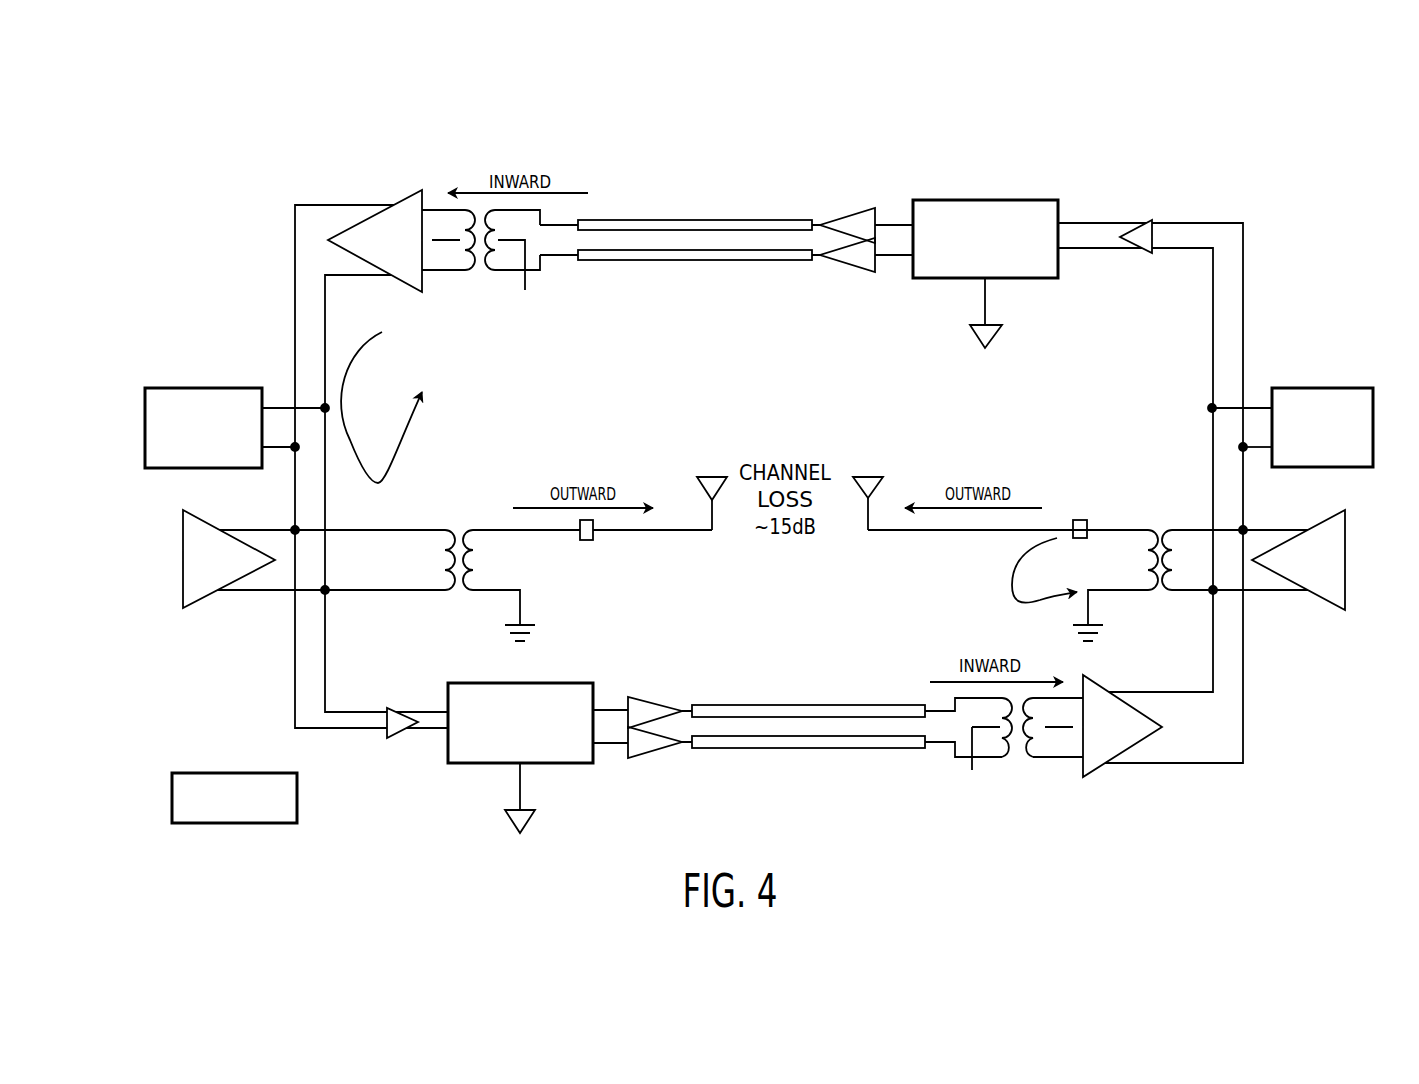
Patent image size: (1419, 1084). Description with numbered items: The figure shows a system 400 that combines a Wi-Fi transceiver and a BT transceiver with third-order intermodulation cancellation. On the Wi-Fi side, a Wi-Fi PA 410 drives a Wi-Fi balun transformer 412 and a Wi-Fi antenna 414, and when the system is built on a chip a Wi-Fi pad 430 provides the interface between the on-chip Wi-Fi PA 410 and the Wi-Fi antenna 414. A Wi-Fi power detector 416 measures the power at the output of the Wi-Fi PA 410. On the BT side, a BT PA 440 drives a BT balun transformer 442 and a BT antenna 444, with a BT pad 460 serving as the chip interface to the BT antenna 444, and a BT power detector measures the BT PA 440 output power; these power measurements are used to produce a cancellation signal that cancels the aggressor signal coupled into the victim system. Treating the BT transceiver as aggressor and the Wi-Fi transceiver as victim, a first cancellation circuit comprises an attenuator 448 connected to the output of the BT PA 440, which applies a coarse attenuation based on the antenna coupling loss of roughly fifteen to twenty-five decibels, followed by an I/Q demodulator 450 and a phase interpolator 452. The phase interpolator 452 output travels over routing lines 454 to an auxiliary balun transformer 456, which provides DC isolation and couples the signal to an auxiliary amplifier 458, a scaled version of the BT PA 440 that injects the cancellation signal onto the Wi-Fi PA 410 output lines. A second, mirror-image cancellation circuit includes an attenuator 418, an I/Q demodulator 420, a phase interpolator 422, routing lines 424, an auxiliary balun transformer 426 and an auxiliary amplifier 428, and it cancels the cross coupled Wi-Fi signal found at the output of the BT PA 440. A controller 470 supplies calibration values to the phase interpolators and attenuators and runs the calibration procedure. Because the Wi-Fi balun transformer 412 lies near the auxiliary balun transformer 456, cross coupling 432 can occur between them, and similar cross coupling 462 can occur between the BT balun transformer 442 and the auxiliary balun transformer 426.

The system 400 is at (180, 147).
The Wi-Fi PA 410 is at (190, 610).
The Wi-Fi balun transformer 412 is at (470, 530).
The Wi-Fi antenna 414 is at (711, 477).
The Wi-Fi power detector 416 is at (200, 388).
The attenuator 418 is at (392, 708).
The I/Q demodulator 420 is at (467, 764).
The phase interpolator 422 is at (632, 697).
The routing lines 424 is at (820, 705).
The auxiliary balun transformer 426 is at (955, 698).
The auxiliary amplifier 428 is at (1095, 777).
The Wi-Fi pad 430 is at (587, 541).
The cross coupling 432 is at (358, 460).
The BT PA 440 is at (1325, 610).
The BT balun transformer 442 is at (1160, 530).
The BT antenna 444 is at (868, 477).
The attenuator 448 is at (1315, 388).
The I/Q demodulator 450 is at (1002, 200).
The phase interpolator 452 is at (875, 208).
The routing lines 454 is at (675, 220).
The auxiliary balun transformer 456 is at (472, 272).
The auxiliary amplifier 458 is at (418, 190).
The BT pad 460 is at (1080, 520).
The cross coupling 462 is at (1017, 581).
The controller 470 is at (216, 773).